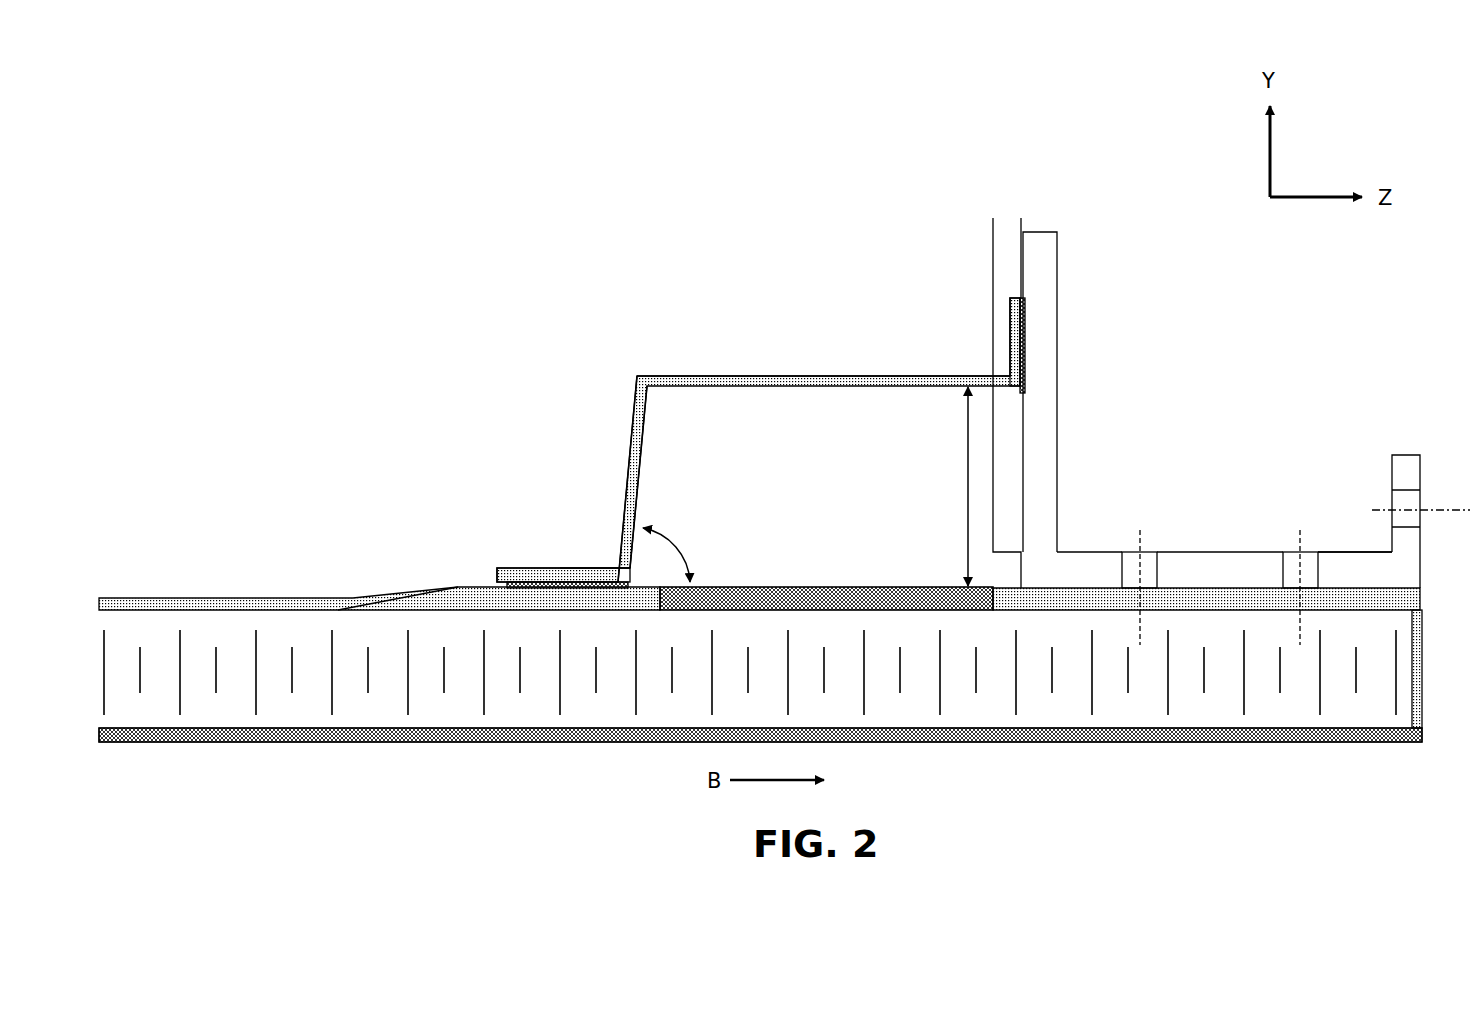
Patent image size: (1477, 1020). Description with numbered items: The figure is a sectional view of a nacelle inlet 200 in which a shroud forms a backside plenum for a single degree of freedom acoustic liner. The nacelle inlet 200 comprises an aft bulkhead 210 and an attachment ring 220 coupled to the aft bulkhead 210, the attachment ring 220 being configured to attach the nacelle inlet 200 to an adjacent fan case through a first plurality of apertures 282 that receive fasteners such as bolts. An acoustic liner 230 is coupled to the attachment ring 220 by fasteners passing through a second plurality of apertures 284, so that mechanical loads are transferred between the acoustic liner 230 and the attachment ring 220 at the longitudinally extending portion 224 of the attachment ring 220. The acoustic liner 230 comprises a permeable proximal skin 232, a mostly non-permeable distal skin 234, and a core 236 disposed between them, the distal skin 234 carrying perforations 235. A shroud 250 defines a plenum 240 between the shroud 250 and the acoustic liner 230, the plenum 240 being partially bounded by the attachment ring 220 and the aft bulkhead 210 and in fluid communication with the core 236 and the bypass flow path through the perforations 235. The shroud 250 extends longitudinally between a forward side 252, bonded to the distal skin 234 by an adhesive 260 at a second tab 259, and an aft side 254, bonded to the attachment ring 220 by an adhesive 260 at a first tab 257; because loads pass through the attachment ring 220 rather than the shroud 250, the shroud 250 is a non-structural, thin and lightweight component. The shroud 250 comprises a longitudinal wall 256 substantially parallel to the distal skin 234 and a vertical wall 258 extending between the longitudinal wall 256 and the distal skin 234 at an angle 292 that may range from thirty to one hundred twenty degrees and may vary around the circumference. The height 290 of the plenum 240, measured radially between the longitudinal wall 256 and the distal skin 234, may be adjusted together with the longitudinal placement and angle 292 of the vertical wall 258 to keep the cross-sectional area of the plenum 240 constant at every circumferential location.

The nacelle inlet 200 is at (611, 165).
The aft bulkhead 210 is at (1003, 250).
The attachment ring 220 is at (1213, 552).
The longitudinally extending portion 224 is at (1343, 552).
The acoustic liner 230 is at (597, 730).
The permeable proximal skin 232 is at (942, 730).
The distal skin 234 is at (1078, 597).
The perforations 235 is at (893, 596).
The core 236 is at (1265, 685).
The plenum 240 is at (838, 468).
The shroud 250 is at (800, 376).
The forward side 252 is at (497, 575).
The aft side 254 is at (1015, 298).
The longitudinal wall 256 is at (700, 376).
The first tab 257 is at (1012, 347).
The vertical wall 258 is at (633, 450).
The second tab 259 is at (590, 575).
The adhesive 260 is at (537, 586).
The first plurality of apertures 282 is at (1408, 490).
The second plurality of apertures 284 is at (1122, 570).
The height 290 is at (968, 455).
The angle 292 is at (680, 537).